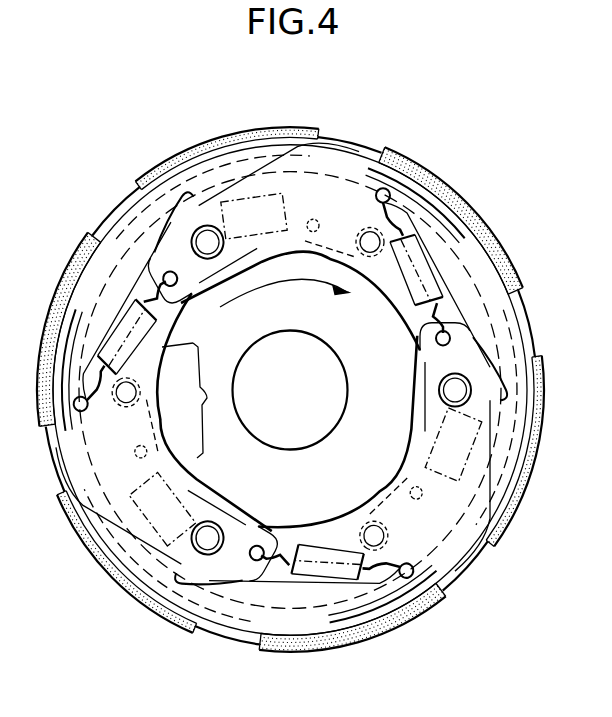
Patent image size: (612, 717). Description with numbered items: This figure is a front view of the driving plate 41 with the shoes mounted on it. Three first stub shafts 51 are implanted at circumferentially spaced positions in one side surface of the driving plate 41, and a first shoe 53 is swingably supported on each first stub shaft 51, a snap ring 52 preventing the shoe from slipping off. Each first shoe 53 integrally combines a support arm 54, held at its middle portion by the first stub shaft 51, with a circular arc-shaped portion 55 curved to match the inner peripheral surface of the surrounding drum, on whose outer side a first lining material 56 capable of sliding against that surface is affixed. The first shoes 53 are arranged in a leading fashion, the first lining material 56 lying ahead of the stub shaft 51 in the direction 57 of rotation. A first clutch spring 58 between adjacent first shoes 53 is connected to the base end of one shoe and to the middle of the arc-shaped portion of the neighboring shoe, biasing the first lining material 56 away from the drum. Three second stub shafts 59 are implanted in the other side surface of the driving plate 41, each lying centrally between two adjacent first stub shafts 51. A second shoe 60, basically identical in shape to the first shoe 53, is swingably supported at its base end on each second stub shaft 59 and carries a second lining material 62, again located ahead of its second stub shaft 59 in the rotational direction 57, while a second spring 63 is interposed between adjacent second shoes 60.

The driving plate 41 is at (290, 450).
The first stub shafts 51 is at (209, 255).
The snap ring 52 is at (224, 243).
The first shoe 53 is at (324, 141).
The support arm 54 is at (194, 482).
The circular arc-shaped portion 55 is at (180, 343).
The first lining material 56 is at (457, 190).
The direction of rotation 57 is at (290, 282).
The first clutch spring 58 is at (437, 298).
The second stub shafts 59 is at (368, 262).
The second shoe 60 is at (496, 303).
The second lining material 62 is at (212, 142).
The second spring 63 is at (287, 207).